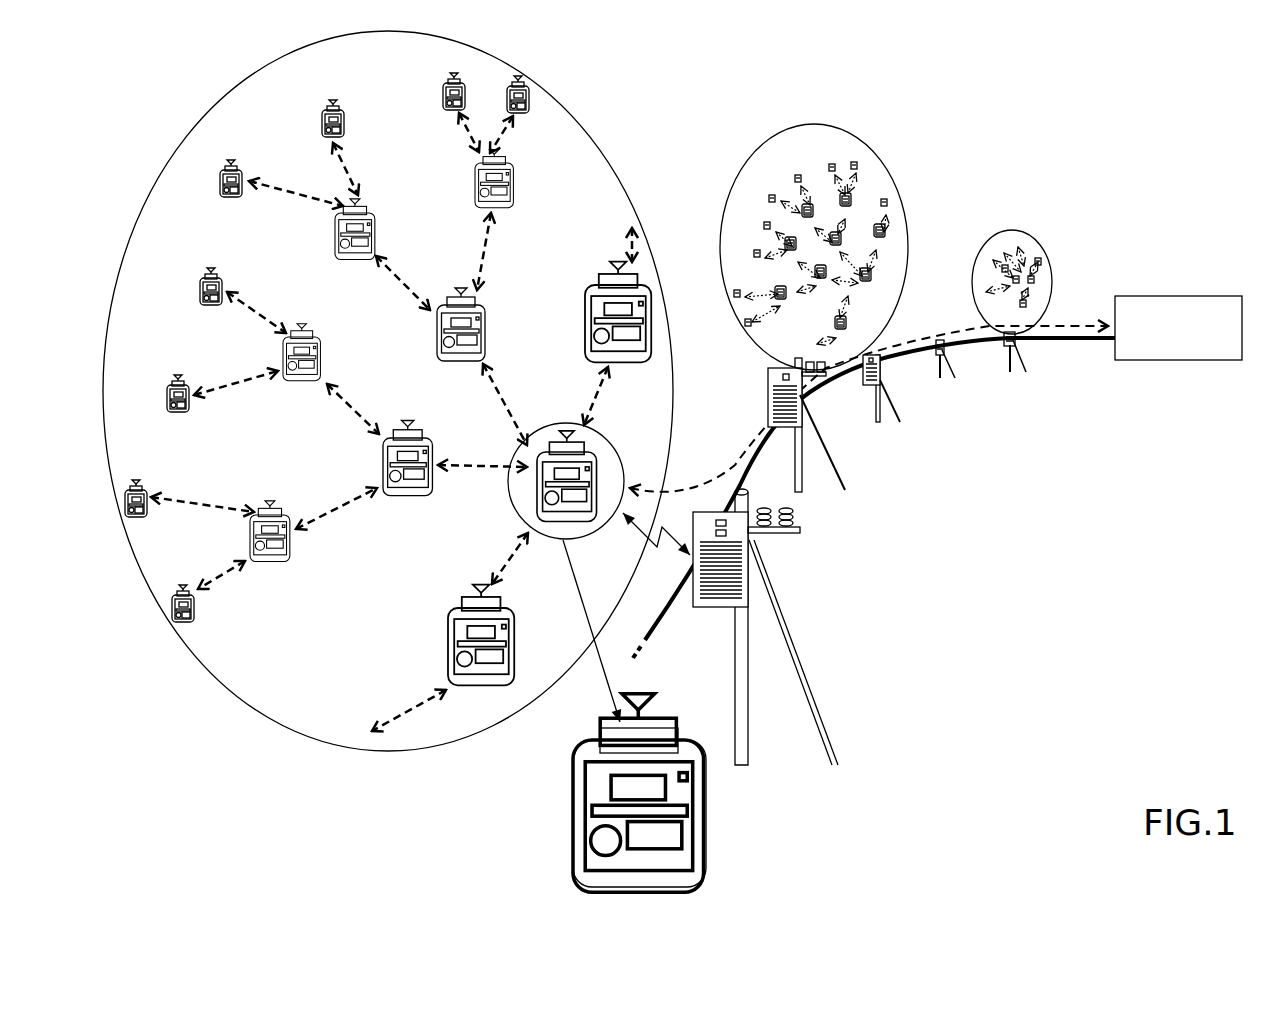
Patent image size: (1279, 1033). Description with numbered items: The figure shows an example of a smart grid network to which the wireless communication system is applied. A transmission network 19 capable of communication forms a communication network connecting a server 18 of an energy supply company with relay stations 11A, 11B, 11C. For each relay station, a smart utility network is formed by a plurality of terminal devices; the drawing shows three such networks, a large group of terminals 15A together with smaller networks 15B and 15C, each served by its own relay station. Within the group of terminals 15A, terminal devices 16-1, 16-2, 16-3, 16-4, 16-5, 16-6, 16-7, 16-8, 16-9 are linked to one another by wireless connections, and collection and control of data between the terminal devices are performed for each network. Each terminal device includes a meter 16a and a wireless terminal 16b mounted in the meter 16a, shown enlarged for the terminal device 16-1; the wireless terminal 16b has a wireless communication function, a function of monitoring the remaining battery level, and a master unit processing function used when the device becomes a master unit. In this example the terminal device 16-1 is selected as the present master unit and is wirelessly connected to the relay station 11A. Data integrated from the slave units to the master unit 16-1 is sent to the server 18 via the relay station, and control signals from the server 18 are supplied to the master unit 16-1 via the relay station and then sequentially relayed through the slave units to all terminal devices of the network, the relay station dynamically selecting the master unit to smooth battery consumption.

The smart utility network 15A is at (592, 142).
The smart utility network 15B is at (883, 157).
The smart utility network 15C is at (1048, 248).
The terminal device 16-1 is at (597, 488).
The terminal device 16-2 is at (503, 310).
The terminal device 16-3 is at (410, 493).
The terminal device 16-4 is at (585, 320).
The terminal device 16-5 is at (448, 650).
The terminal device 16-6 is at (513, 185).
The terminal device 16-7 is at (375, 232).
The terminal device 16-8 is at (320, 358).
The terminal device 16-9 is at (290, 532).
The meter 16a is at (573, 814).
The wireless terminal 16b is at (600, 735).
The relay station 11A is at (750, 548).
The relay station 11B is at (768, 378).
The relay station 11C is at (1010, 359).
The server 18 is at (1180, 296).
The transmission network 19 is at (755, 470).